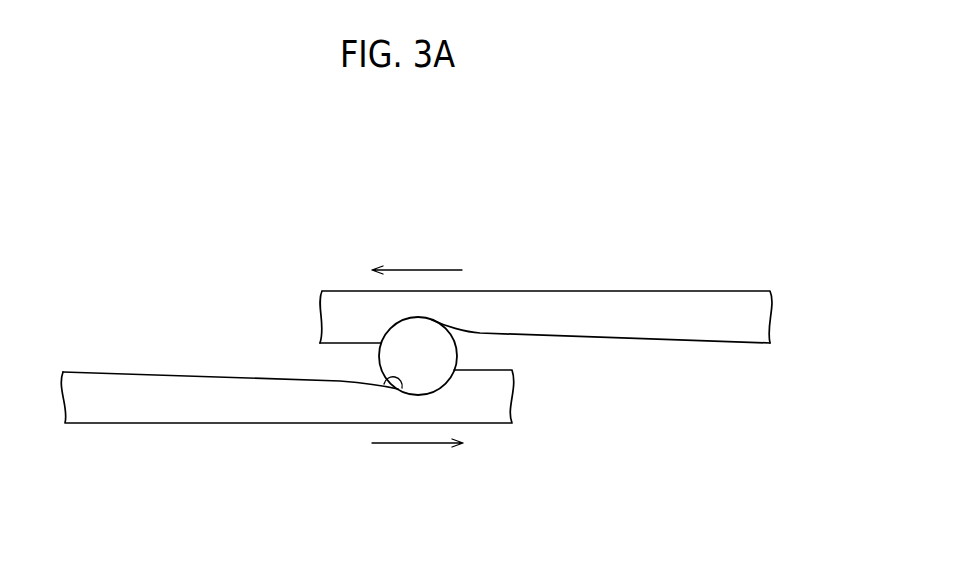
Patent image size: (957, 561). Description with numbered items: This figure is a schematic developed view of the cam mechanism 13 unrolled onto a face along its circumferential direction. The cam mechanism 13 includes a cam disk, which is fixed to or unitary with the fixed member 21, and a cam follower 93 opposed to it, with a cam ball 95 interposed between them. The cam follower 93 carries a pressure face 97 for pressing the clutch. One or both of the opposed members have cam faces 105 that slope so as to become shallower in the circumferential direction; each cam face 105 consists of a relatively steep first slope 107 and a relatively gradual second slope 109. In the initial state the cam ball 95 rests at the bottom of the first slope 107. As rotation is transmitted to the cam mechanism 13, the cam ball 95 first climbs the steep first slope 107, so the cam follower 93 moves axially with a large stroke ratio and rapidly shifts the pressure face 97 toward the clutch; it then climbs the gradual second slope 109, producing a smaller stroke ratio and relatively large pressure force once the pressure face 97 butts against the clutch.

The cam mechanism 13 is at (434, 187).
The fixed member 21 is at (150, 434).
The cam follower 93 is at (580, 283).
The cam ball 95 is at (447, 345).
The pressure face 97 is at (660, 303).
The cam face 105 is at (438, 312).
The first slope 107 is at (382, 386).
The second slope 109 is at (352, 380).